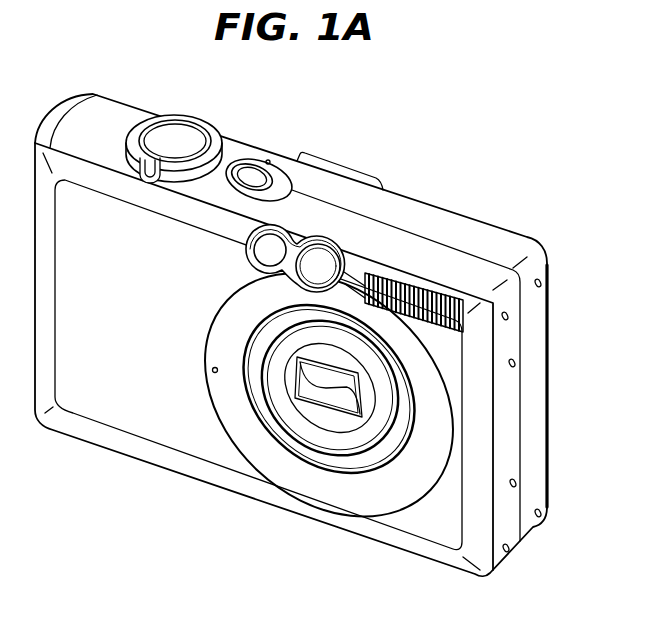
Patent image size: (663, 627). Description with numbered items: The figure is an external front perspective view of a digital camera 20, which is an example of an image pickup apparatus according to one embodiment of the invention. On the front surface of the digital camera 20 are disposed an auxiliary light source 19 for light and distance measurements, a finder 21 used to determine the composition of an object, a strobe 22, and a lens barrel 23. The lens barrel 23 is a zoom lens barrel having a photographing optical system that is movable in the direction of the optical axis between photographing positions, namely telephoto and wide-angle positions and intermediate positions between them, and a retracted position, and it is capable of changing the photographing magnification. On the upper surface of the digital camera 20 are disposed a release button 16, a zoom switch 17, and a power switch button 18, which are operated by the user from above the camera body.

The release button 16 is at (183, 128).
The zoom switch 17 is at (220, 135).
The power switch button 18 is at (250, 173).
The auxiliary light source 19 is at (272, 248).
The digital camera 20 is at (150, 420).
The finder 21 is at (318, 267).
The strobe 22 is at (423, 287).
The lens barrel 23 is at (332, 440).